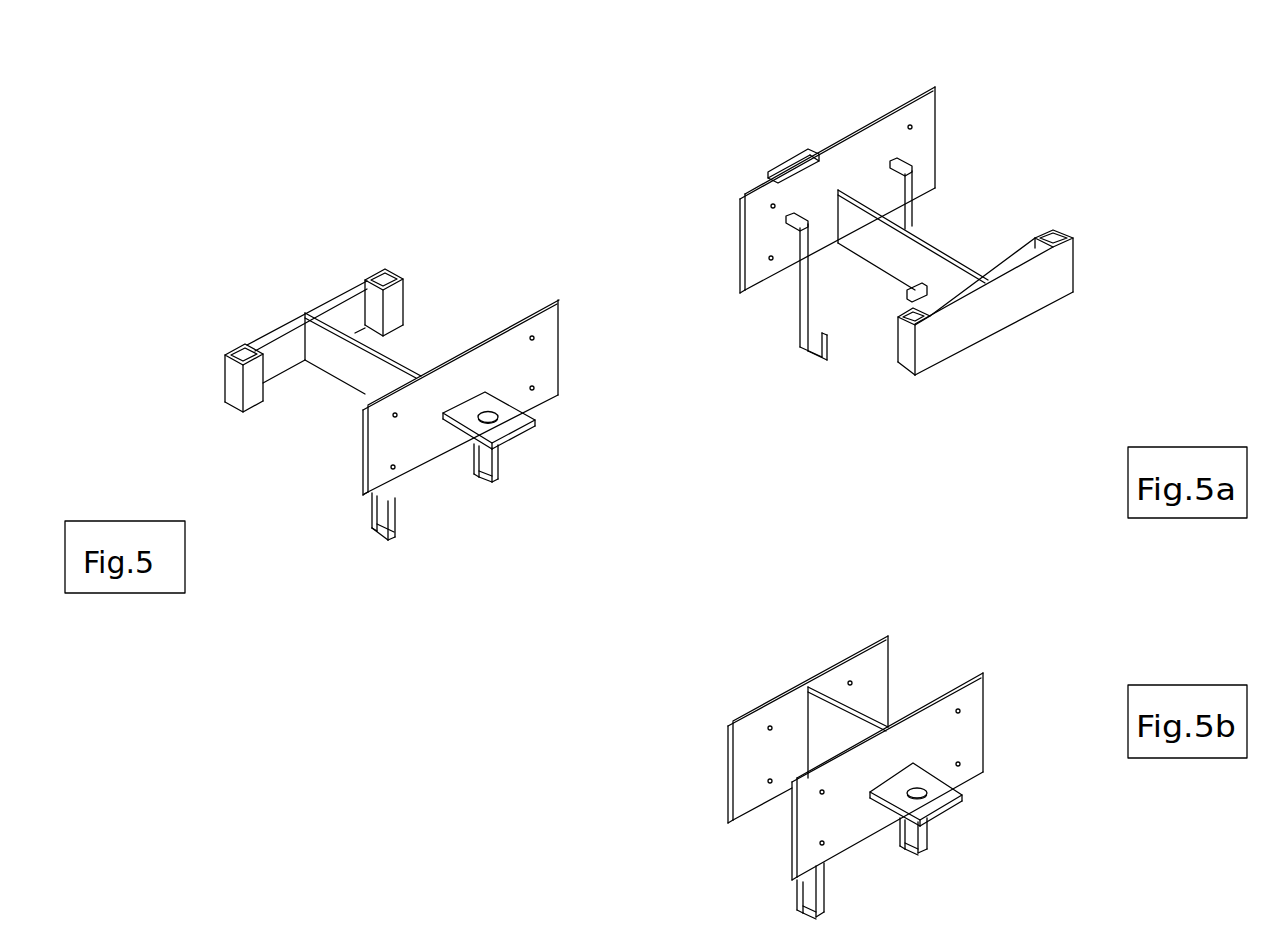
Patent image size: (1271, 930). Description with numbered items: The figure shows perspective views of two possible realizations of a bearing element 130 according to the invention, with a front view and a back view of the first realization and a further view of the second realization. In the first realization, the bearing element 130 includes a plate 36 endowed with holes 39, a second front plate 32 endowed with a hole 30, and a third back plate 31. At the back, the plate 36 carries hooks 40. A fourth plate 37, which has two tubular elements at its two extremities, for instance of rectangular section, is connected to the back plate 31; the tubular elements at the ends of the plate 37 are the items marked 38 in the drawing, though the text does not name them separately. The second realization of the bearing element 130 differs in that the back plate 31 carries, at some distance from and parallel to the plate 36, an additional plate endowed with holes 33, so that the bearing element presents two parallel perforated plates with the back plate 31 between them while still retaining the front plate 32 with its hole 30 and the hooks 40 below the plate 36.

In FIG. 5, the bearing element 130 is at (268, 287).
In FIG. 5A, the bearing element 130 is at (997, 216).
In FIG. 5, the hole 30 is at (487, 424).
In FIG. 5, the third back plate 31 is at (392, 362).
In FIG. 5A, the third back plate 31 is at (923, 262).
In FIG. 5B, the third back plate 31 is at (873, 685).
In FIG. 5, the second front plate 32 is at (510, 417).
In FIG. 5A, the second front plate 32 is at (793, 160).
In FIG. 5B, the second front plate 32 is at (943, 810).
In FIG. 5B, the holes 33 is at (850, 683).
In FIG. 5, the plate 36 is at (538, 328).
In FIG. 5A, the plate 36 is at (925, 115).
In FIG. 5B, the plate 36 is at (970, 730).
In FIG. 5, the fourth plate 37 is at (283, 352).
In FIG. 5A, the fourth plate 37 is at (1047, 275).
In FIG. 5, the square tube block 38 is at (372, 270).
In FIG. 5A, the square tube block 38 is at (932, 355).
In FIG. 5, the holes 39 is at (532, 338).
In FIG. 5A, the holes 39 is at (910, 127).
In FIG. 5, the hooks 40 is at (493, 480).
In FIG. 5A, the hooks 40 is at (917, 300).
In FIG. 5B, the hooks 40 is at (820, 908).